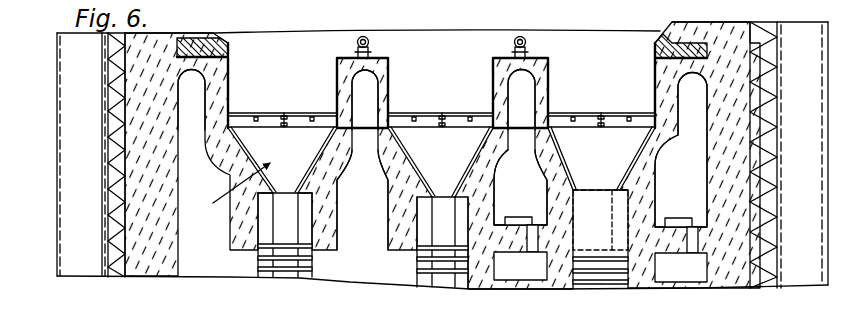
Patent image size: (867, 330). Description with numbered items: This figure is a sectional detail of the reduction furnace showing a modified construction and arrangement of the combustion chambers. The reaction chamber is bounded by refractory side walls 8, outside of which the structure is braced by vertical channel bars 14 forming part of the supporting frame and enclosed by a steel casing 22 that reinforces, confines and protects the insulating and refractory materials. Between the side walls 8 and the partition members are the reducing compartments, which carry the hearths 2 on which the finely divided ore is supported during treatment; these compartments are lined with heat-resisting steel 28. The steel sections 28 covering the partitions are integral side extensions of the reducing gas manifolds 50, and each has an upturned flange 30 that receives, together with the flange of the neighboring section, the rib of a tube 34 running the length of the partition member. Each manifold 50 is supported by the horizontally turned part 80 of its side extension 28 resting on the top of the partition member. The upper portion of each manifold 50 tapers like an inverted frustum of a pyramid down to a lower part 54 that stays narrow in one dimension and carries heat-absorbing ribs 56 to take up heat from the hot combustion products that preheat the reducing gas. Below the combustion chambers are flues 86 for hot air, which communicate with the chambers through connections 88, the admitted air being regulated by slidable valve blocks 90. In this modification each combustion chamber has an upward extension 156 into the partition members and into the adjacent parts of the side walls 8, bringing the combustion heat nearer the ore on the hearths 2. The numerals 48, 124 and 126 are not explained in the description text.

The hearth 2 is at (271, 113).
The side wall 8 is at (128, 200).
The vertical channel bar 14 is at (73, 272).
The steel casing 22 is at (106, 229).
The heat-resisting steel lining 28 is at (390, 91).
The upturned flange 30 is at (357, 53).
The tube 34 is at (370, 42).
The chamber 48 is at (386, 160).
The reducing gas manifold 50 is at (230, 188).
The lower part of manifold 54 is at (278, 218).
The heat-absorbing rib 56 is at (308, 271).
The horizontally turned part 80 is at (244, 158).
The flue 86 is at (506, 276).
The connection 88 is at (535, 219).
The valve block 90 is at (679, 220).
The column wall 124 is at (384, 72).
The side body 126 is at (232, 69).
The upward extension 156 is at (199, 83).